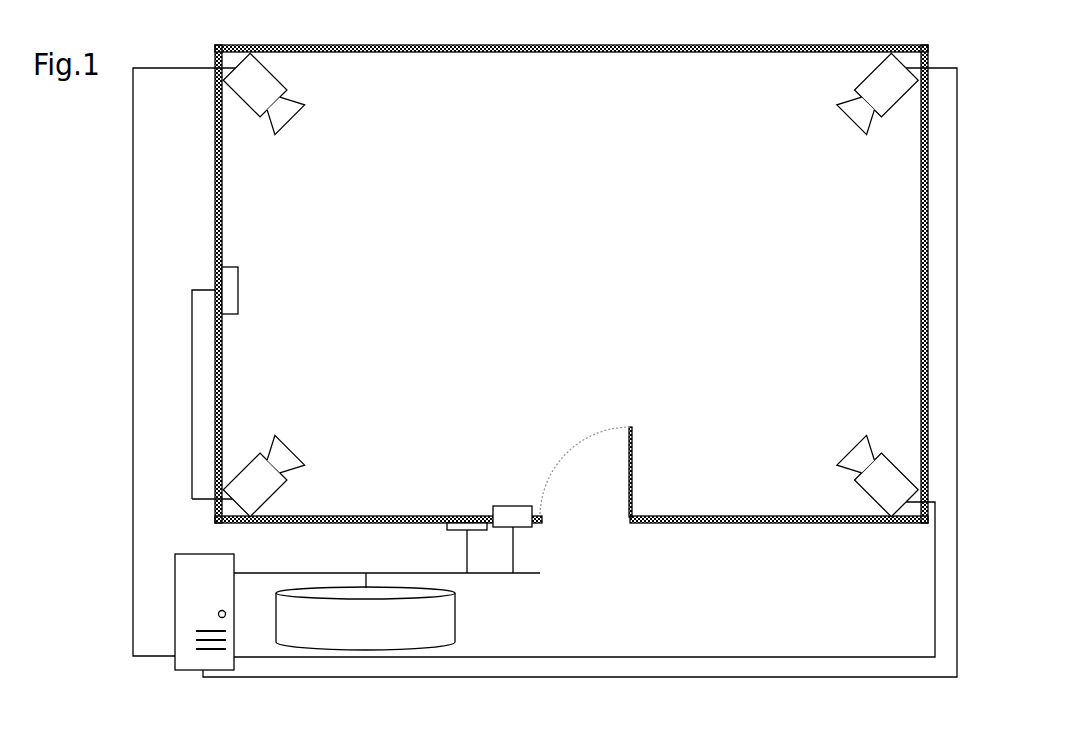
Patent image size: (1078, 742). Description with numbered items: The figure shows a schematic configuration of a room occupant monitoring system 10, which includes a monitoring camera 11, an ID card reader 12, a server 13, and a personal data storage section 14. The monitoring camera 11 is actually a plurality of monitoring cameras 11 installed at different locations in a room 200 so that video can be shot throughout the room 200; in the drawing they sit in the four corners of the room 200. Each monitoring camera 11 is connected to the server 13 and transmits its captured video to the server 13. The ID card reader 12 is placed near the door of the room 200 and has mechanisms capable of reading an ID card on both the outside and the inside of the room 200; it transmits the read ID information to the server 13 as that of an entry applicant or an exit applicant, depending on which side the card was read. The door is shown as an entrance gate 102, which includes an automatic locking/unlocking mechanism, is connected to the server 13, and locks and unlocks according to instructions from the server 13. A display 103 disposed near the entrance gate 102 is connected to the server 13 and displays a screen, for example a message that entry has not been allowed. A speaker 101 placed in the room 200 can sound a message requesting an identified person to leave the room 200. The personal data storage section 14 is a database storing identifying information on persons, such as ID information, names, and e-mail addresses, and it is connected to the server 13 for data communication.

The room occupant monitoring system 10 is at (113, 273).
The monitoring camera 11 is at (277, 74).
The ID card reader 12 is at (513, 505).
The server 13 is at (236, 556).
The personal data storage section 14 is at (457, 612).
The speaker 101 is at (239, 288).
The entrance gate 102 is at (634, 442).
The display 103 is at (447, 529).
The room 200 is at (213, 213).